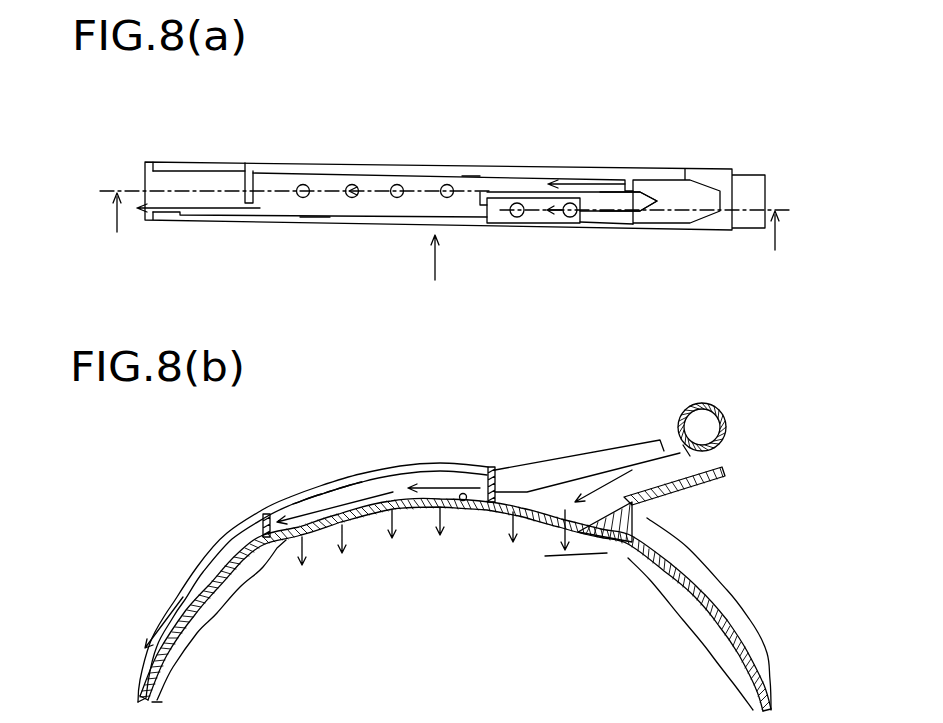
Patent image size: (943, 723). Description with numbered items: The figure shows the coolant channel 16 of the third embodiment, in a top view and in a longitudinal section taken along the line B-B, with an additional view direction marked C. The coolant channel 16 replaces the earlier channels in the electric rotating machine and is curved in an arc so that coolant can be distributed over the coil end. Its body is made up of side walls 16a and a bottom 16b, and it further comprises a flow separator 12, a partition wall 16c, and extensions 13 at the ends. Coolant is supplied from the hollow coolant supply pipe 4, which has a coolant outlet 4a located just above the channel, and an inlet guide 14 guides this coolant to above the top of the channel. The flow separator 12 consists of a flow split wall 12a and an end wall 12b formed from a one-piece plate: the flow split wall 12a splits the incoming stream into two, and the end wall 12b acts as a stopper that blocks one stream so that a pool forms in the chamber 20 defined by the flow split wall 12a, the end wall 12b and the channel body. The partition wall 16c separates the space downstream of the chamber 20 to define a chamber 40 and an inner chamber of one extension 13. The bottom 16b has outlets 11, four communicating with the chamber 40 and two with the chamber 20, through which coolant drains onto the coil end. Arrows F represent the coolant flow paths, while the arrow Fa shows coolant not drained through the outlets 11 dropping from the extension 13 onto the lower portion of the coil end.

In FIG. 8b, the coolant supply pipe 4 is at (718, 408).
In FIG. 8b, the coolant outlet 4a is at (683, 445).
In FIG. 8a, the coolant outlets 11 is at (447, 185).
In FIG. 8b, the coolant outlets 11 is at (392, 540).
In FIG. 8a, the flow separator 12 is at (568, 134).
In FIG. 8b, the flow separator 12 is at (562, 432).
In FIG. 8a, the flow split wall 12a is at (590, 190).
In FIG. 8b, the flow split wall 12a is at (587, 449).
In FIG. 8a, the end wall 12b is at (506, 153).
In FIG. 8b, the end wall 12b is at (489, 470).
In FIG. 8b, the extensions 13 is at (219, 615).
In FIG. 8a, the inlet guide 14 is at (665, 178).
In FIG. 8b, the inlet guide 14 is at (676, 497).
In FIG. 8a, the coolant channel 16 is at (246, 162).
In FIG. 8b, the coolant channel 16 is at (226, 532).
In FIG. 8a, the side walls 16a is at (278, 173).
In FIG. 8b, the side walls 16a is at (310, 497).
In FIG. 8a, the bottom 16b is at (470, 176).
In FIG. 8b, the bottom 16b is at (459, 512).
In FIG. 8a, the partition wall 16c is at (250, 223).
In FIG. 8b, the partition wall 16c is at (265, 512).
In FIG. 8a, the chamber 20 is at (490, 232).
In FIG. 8b, the chamber 20 is at (545, 556).
In FIG. 8a, the chamber 40 is at (314, 222).
In FIG. 8a, the arrows representing coolant flow paths F is at (678, 190).
In FIG. 8b, the arrows representing coolant flow paths F is at (420, 463).
In FIG. 8a, the arrow representing dropping coolant Fa is at (182, 222).
In FIG. 8b, the arrow representing dropping coolant Fa is at (182, 597).
In FIG. 8a, the section line B- B is at (445, 236).
In FIG. 8a, the view direction C is at (434, 269).